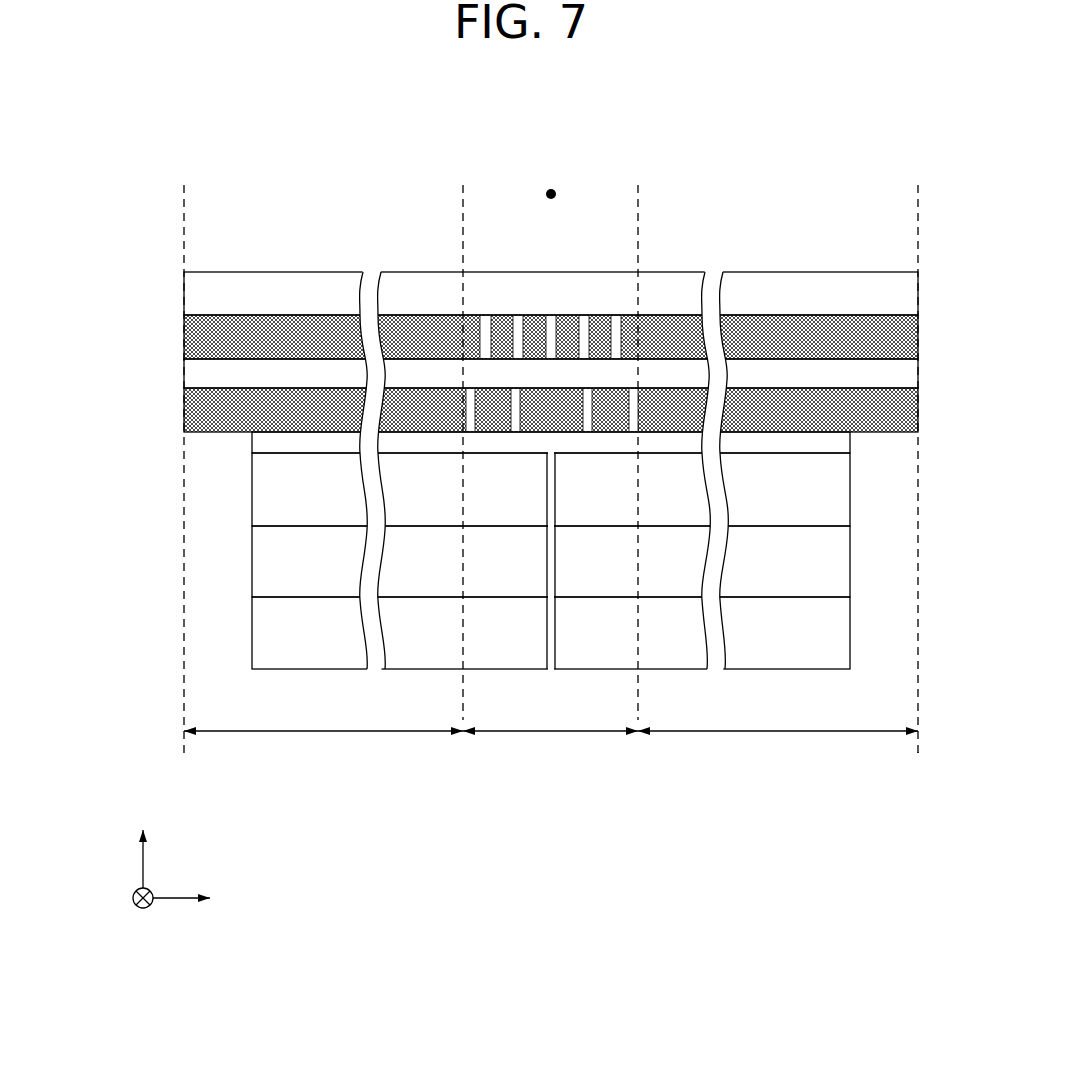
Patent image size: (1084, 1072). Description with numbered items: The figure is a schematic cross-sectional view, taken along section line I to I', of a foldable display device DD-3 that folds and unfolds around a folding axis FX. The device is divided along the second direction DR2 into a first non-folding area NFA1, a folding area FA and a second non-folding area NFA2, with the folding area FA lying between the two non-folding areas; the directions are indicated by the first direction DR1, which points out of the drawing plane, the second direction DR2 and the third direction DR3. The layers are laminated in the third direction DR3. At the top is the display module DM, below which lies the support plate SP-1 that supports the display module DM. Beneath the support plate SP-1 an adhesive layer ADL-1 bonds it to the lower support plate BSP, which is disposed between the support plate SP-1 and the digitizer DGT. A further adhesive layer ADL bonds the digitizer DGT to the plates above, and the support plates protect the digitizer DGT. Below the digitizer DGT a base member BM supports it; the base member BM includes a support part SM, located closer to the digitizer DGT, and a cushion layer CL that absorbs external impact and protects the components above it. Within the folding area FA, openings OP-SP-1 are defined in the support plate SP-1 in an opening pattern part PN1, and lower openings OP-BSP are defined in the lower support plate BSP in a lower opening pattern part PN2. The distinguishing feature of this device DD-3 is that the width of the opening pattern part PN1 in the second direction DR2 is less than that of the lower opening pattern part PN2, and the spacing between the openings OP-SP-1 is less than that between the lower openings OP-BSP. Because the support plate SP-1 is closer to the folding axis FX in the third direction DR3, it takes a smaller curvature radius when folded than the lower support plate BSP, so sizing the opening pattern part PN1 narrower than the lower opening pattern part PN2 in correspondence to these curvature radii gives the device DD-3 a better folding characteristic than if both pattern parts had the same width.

The display device DD-3 is at (874, 171).
The display module DM is at (192, 297).
The support plate SP-1 is at (192, 339).
The adhesive layer ADL-1 is at (192, 374).
The lower support plate BSP is at (192, 410).
The adhesive layer ADL is at (262, 442).
The digitizer DGT is at (262, 487).
The base member BM is at (108, 547).
The support part SM is at (262, 559).
The cushion layer CL is at (262, 634).
The opening pattern part PN1 is at (620, 315).
The lower opening pattern part PN2 is at (465, 432).
The openings OP-SP-1 is at (490, 332).
The lower openings OP-BSP is at (585, 401).
The folding axis FX is at (551, 180).
The first non-folding area NFA1 is at (323, 745).
The folding area FA is at (550, 745).
The second non-folding area NFA2 is at (778, 745).
The section line start I is at (184, 764).
The section line end I' is at (919, 764).
The first direction DR1 is at (143, 913).
The second direction DR2 is at (203, 898).
The third direction DR3 is at (143, 846).